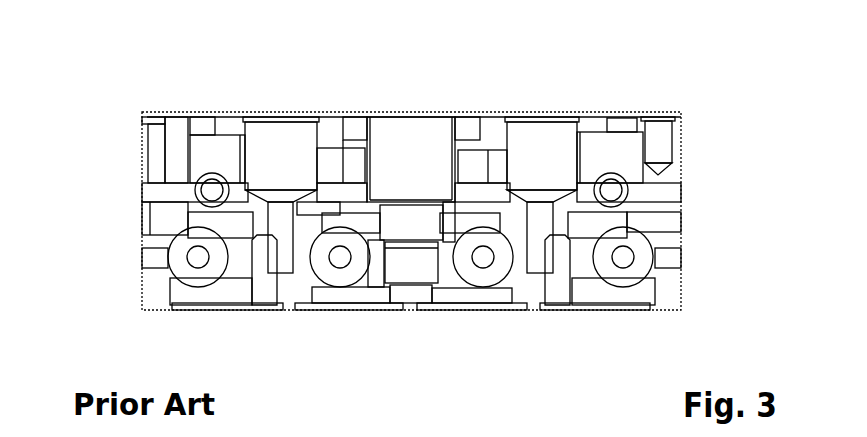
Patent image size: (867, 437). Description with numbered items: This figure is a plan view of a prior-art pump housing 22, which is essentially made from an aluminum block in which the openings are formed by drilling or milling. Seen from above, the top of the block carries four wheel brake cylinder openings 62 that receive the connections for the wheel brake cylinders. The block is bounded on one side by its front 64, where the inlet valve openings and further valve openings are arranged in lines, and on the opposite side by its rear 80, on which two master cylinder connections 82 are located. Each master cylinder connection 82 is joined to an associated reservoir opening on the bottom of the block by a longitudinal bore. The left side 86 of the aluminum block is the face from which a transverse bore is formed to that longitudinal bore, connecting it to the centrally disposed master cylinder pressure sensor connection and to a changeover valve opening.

The pump housing 22 is at (107, 110).
The wheel brake cylinder opening 62 is at (196, 283).
The front 64 is at (690, 284).
The rear 80 is at (661, 108).
The master cylinder connection 82 is at (282, 127).
The left side 86 is at (136, 286).